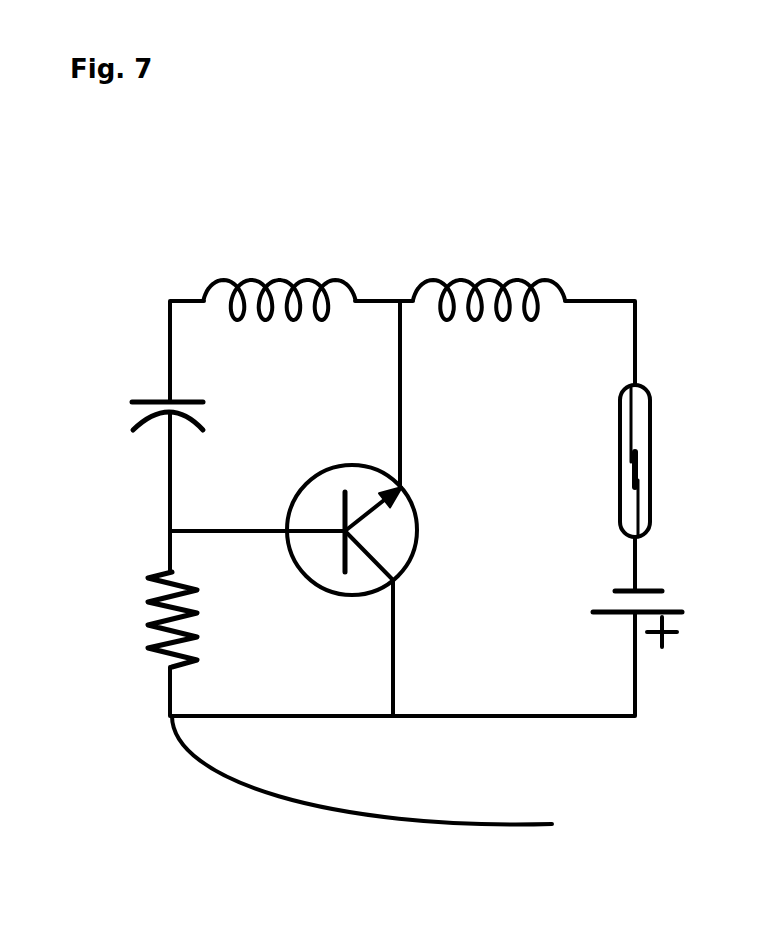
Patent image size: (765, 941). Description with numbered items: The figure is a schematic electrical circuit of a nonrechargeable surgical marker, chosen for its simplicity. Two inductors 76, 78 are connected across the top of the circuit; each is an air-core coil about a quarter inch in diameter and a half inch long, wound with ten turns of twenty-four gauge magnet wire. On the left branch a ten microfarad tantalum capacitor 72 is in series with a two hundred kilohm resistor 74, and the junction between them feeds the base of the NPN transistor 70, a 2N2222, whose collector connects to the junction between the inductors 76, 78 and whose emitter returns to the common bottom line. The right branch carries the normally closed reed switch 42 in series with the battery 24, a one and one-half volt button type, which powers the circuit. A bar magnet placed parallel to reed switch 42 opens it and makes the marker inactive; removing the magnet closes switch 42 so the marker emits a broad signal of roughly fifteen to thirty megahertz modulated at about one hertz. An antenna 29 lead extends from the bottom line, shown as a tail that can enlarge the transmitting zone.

The inductor 76 is at (280, 282).
The inductor 78 is at (489, 281).
The capacitor 72 is at (140, 413).
The NPN transistor 70 is at (352, 509).
The resistor 74 is at (138, 619).
The reed switch 42 is at (613, 461).
The battery 24 is at (621, 609).
The antenna 29 is at (362, 770).